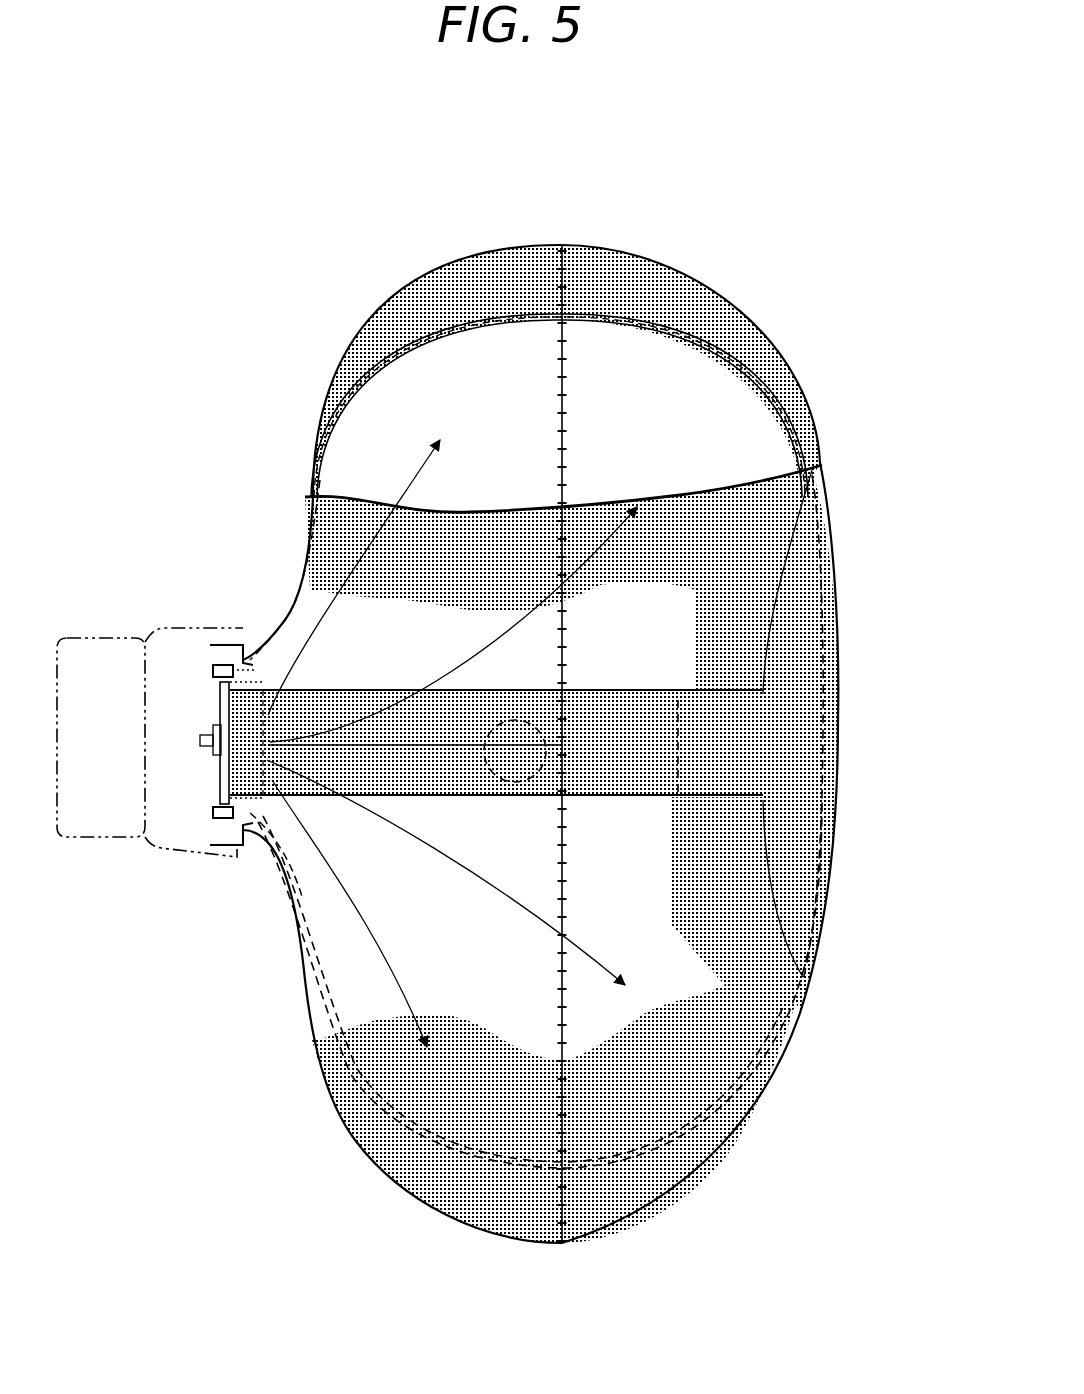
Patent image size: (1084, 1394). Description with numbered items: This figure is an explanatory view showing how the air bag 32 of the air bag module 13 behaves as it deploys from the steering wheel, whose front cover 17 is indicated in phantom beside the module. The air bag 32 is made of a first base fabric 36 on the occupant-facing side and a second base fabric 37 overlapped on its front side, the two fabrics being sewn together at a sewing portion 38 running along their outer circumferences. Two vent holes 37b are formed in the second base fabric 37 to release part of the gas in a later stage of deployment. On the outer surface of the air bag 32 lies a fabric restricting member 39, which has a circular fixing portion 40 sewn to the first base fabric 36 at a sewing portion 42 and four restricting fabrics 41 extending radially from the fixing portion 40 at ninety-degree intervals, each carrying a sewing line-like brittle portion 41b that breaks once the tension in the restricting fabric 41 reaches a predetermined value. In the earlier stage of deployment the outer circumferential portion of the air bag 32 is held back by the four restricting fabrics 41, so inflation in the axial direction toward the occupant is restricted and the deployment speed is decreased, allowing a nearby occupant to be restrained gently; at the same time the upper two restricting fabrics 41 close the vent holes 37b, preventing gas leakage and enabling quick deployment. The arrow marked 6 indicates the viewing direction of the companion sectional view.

The air bag 32 is at (363, 320).
The second base fabric 37 is at (492, 283).
The first base fabric 36 is at (653, 280).
The vent hole 37b is at (507, 327).
The restricting fabric 41 is at (650, 332).
The sewing portion 38 is at (562, 465).
The fabric restricting member 39 is at (832, 586).
The sewing portion 42 is at (825, 705).
The fixing portion 40 is at (803, 878).
The brittle portion 41b is at (693, 730).
The air bag module 13 is at (300, 690).
The front cover 17 is at (178, 852).
The section line for FIG. 6 is at (862, 750).